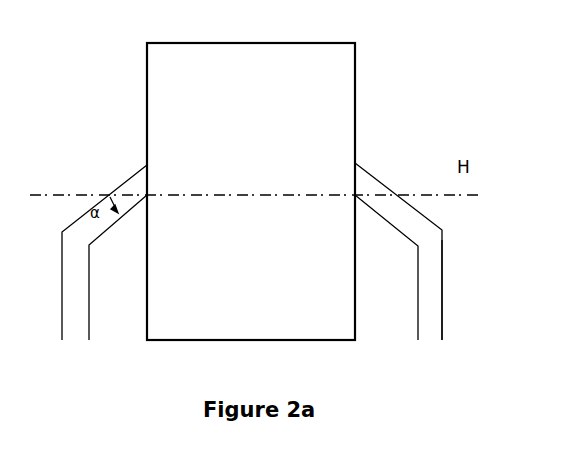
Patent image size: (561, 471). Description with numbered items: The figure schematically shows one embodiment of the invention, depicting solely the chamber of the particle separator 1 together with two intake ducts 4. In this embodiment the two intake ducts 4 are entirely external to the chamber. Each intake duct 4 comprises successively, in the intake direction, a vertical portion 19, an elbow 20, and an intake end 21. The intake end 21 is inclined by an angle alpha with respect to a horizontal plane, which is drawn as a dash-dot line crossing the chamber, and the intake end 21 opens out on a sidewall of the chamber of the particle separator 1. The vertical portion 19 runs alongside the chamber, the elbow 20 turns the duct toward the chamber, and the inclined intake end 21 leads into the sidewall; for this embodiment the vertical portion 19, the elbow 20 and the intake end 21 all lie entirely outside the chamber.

The particle separator 1 is at (355, 73).
The intake duct 4 is at (448, 285).
The vertical portion 19 is at (437, 315).
The elbow 20 is at (90, 247).
The intake end 21 is at (392, 212).